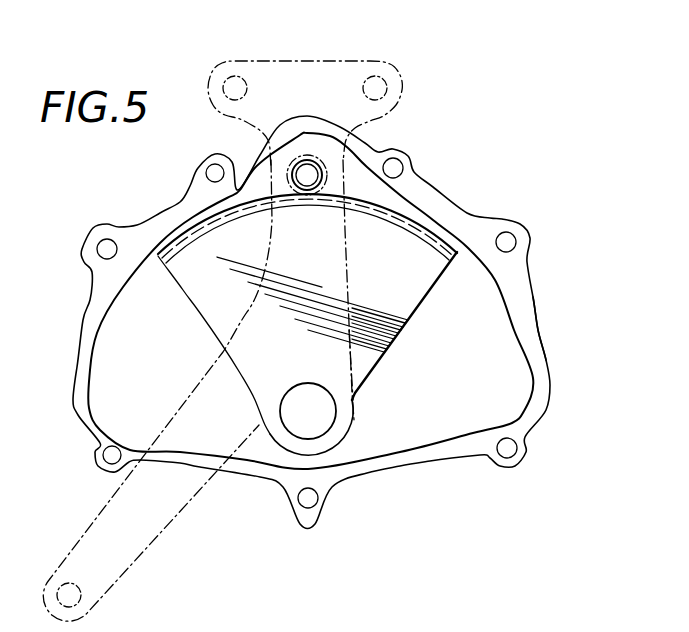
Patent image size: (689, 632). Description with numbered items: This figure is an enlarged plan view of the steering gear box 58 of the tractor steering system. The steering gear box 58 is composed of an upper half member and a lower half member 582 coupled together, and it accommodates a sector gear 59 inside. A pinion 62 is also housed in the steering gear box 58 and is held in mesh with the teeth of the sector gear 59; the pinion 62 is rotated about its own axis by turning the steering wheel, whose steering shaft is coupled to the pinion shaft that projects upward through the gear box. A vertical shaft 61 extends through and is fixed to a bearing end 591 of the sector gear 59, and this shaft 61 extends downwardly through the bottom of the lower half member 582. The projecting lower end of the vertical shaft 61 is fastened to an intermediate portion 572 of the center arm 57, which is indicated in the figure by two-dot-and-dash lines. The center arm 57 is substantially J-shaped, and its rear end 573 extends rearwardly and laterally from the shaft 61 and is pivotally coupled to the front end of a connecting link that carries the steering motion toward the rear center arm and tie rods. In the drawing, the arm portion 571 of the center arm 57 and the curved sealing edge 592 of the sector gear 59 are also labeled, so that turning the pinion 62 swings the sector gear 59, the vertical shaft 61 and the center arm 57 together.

The center arm 57 is at (350, 291).
The bracket portion of lever 571 is at (338, 61).
The intermediate portion 572 is at (356, 364).
The rear end 573 is at (85, 614).
The steering gear box 58 is at (522, 219).
The lower half member 582 is at (518, 298).
The sector gear 59 is at (415, 274).
The bearing end 591 is at (300, 447).
The sealing edge of vane 592 is at (407, 214).
The vertical shaft 61 is at (298, 397).
The pinion 62 is at (329, 188).